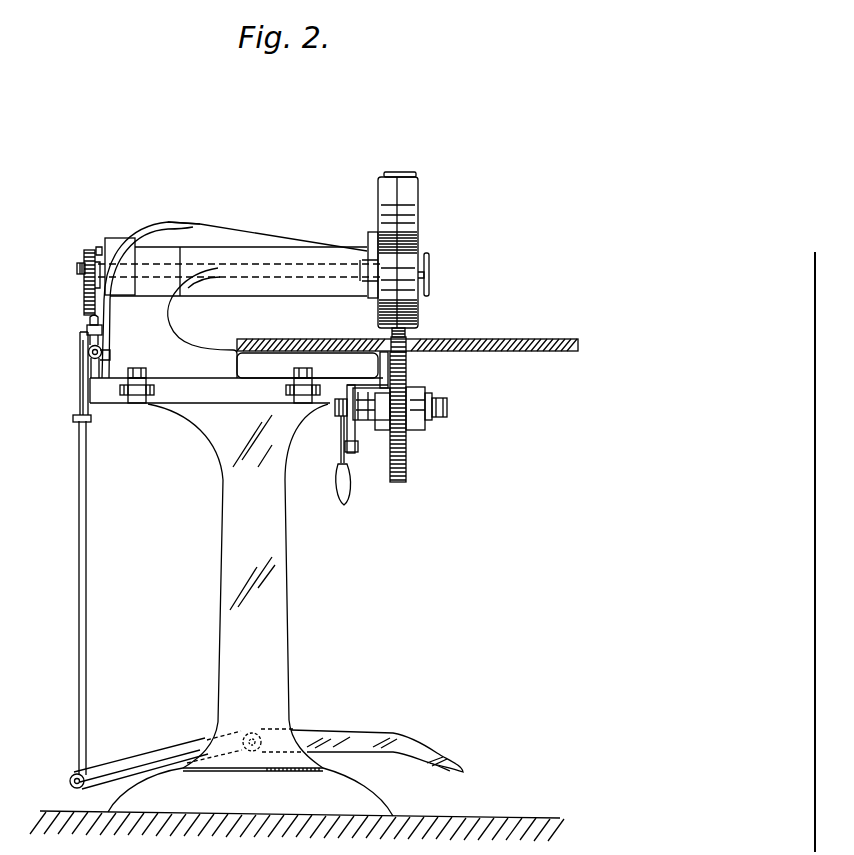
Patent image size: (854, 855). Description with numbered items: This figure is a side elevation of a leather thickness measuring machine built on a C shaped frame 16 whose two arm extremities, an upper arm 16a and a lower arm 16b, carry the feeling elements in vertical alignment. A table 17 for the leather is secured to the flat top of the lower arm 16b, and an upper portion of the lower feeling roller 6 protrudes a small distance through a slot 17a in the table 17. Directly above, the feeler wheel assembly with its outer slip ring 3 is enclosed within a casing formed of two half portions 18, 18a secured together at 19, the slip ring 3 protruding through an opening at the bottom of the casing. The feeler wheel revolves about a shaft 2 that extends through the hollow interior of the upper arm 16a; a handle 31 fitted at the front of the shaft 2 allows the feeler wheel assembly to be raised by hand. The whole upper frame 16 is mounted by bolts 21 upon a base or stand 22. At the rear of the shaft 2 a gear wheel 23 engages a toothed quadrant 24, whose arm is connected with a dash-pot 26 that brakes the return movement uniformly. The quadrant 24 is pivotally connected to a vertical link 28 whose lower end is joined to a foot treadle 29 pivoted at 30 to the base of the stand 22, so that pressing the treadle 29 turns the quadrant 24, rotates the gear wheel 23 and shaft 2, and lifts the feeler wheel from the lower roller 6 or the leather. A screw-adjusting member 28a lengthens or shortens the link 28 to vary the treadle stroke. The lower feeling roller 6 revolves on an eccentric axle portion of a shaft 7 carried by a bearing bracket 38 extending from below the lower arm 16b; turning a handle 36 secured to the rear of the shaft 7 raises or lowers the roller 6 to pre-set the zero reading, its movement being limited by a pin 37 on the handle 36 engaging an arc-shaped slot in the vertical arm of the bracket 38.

The shaft 2 is at (290, 264).
The outer slip ring 3 is at (405, 331).
The lower feeling roller 6 is at (407, 474).
The shaft 7 is at (366, 400).
The C shaped frame 16 is at (165, 335).
The upper arm extremity 16a is at (240, 240).
The lower arm extremity 16b is at (275, 360).
The table 17 is at (544, 350).
The slot 17a is at (410, 352).
The casing half portion 18 is at (410, 208).
The casing half portion 18a is at (383, 200).
The securing point of casing halves 19 is at (407, 177).
The bolts 21 is at (145, 403).
The base or stand 22 is at (278, 676).
The gear wheel 23 is at (89, 255).
The toothed quadrant 24 is at (83, 299).
The dash-pot 26 is at (89, 355).
The vertical link 28 is at (79, 529).
The screw-adjusting member 28a is at (75, 421).
The foot treadle 29 is at (385, 745).
The treadle pivot 30 is at (254, 751).
The handle 31 is at (432, 255).
The handle 36 is at (348, 494).
The pin 37 is at (340, 450).
The bearing bracket 38 is at (368, 420).